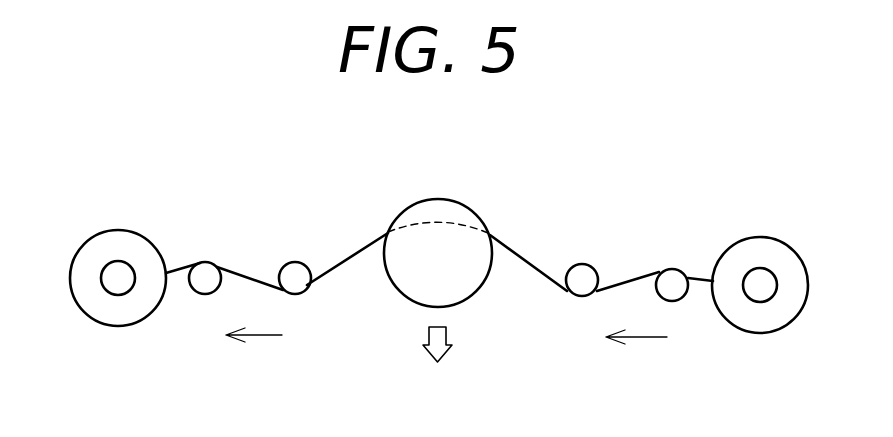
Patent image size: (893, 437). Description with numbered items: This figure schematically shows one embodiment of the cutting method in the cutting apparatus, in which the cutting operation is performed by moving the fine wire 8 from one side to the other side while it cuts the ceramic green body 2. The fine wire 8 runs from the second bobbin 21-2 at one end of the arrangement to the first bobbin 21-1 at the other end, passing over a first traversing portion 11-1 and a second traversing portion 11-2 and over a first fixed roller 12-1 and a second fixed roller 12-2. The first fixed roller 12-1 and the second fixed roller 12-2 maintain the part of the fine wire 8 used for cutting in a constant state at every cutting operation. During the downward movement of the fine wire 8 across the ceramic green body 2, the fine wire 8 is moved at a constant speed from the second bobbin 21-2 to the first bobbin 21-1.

The ceramic green body 2 is at (455, 202).
The fine wire 8 is at (542, 278).
The first traversing portion 11-1 is at (198, 294).
The second traversing portion 11-2 is at (678, 301).
The first fixed roller 12-1 is at (295, 262).
The second fixed roller 12-2 is at (582, 264).
The first bobbin 21-1 is at (120, 231).
The second bobbin 21-2 is at (767, 238).